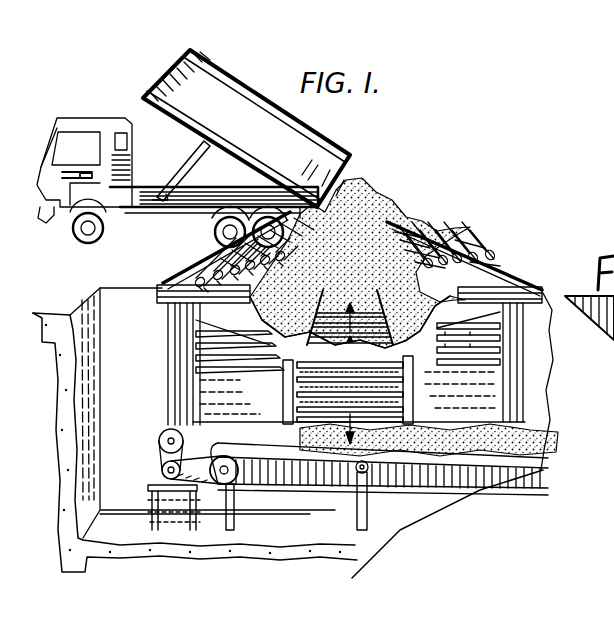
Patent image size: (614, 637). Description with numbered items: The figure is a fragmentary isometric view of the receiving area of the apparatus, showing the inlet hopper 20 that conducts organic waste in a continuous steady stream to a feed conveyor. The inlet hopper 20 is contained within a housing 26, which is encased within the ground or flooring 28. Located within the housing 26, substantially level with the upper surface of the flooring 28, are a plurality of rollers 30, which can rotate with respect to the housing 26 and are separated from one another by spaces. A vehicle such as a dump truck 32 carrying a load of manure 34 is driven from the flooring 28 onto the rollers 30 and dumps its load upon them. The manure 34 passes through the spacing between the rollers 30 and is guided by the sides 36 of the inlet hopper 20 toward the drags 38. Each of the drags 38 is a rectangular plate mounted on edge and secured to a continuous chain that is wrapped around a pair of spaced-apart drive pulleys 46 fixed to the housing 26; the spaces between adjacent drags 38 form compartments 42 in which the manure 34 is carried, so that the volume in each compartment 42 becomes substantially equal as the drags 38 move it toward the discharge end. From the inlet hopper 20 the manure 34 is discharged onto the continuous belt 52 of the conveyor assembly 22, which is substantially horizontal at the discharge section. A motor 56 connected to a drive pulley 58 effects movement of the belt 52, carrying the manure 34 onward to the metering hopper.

The inlet hopper 20 is at (500, 236).
The conveyor assembly 22 is at (487, 475).
The housing 26 is at (505, 268).
The ground or flooring 28 is at (147, 267).
The rollers 30 is at (455, 228).
The dump truck 32 is at (100, 104).
The manure 34 is at (375, 205).
The sides 36 is at (279, 321).
The drags 38 is at (405, 392).
The compartments 42 is at (395, 318).
The drive pulleys 46 is at (196, 389).
The continuous belt 52 is at (333, 448).
The motor 56 is at (160, 458).
The drive pulley 58 is at (228, 480).